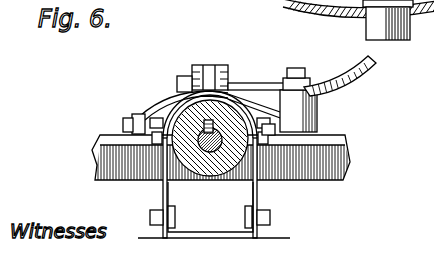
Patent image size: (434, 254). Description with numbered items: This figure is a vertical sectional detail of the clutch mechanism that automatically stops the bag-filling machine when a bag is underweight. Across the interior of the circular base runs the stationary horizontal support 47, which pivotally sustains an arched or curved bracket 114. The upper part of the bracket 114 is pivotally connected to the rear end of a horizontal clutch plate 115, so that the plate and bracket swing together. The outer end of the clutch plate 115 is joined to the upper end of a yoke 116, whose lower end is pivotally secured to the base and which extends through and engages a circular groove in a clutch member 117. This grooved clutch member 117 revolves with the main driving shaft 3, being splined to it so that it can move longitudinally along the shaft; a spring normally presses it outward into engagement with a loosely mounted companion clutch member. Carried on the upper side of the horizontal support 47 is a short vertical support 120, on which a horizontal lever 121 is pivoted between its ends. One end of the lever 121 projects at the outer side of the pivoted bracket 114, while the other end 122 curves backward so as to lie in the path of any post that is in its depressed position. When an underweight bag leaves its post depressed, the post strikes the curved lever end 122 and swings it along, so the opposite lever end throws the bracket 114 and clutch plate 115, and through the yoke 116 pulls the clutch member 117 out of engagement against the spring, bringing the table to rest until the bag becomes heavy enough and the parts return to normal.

The main driving shaft 3 is at (210, 152).
The stationary horizontal support 47 is at (92, 130).
The arched or curved bracket 114 is at (157, 108).
The horizontal clutch plate 115 is at (200, 65).
The yoke 116 is at (262, 190).
The grooved clutch member 117 is at (185, 160).
The short vertical support 120 is at (318, 112).
The horizontal lever 121 is at (267, 87).
The curved lever end 122 is at (368, 60).